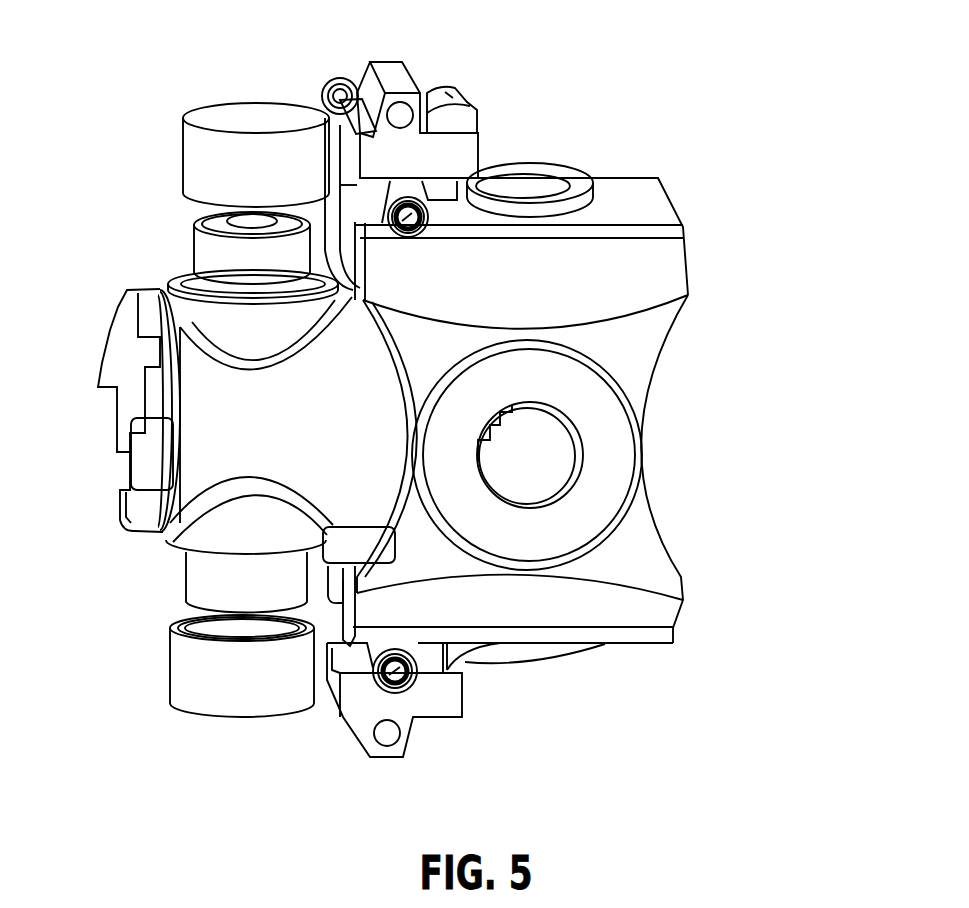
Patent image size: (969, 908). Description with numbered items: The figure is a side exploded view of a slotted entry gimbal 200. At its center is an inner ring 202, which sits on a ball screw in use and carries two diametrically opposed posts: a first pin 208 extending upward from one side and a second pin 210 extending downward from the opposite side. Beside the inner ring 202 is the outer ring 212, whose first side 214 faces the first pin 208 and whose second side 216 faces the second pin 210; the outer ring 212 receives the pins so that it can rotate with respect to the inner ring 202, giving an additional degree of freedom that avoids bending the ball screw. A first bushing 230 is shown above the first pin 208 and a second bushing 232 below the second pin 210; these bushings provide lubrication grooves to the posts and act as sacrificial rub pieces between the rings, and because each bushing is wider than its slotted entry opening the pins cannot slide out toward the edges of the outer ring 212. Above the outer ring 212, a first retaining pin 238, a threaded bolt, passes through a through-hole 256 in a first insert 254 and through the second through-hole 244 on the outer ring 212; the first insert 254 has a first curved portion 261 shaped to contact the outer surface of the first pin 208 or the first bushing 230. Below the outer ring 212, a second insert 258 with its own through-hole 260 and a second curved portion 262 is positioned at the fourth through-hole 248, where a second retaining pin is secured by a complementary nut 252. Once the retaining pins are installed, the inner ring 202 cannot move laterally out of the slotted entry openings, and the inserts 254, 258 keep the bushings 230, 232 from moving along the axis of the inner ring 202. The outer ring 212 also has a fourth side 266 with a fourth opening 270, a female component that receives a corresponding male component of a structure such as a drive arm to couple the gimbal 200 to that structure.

The slotted entry gimbal 200 is at (768, 99).
The inner ring 202 is at (127, 300).
The first pin 208 is at (204, 240).
The second pin 210 is at (192, 580).
The outer ring 212 is at (668, 264).
The first side 214 is at (178, 272).
The second side 216 is at (181, 553).
The first bushing 230 is at (198, 160).
The second bushing 232 is at (221, 704).
The first retaining pin 238 is at (324, 87).
The second through-hole 244 is at (394, 235).
The fourth through-hole 248 is at (421, 676).
The complementary nut 252 is at (420, 236).
The first insert 254 is at (392, 70).
The through-hole 256 is at (402, 120).
The second insert 258 is at (380, 752).
The through-hole 260 is at (390, 737).
The first curved portion 261 is at (465, 101).
The second curved portion 262 is at (437, 657).
The fourth side 266 is at (606, 463).
The fourth opening 270 is at (541, 485).